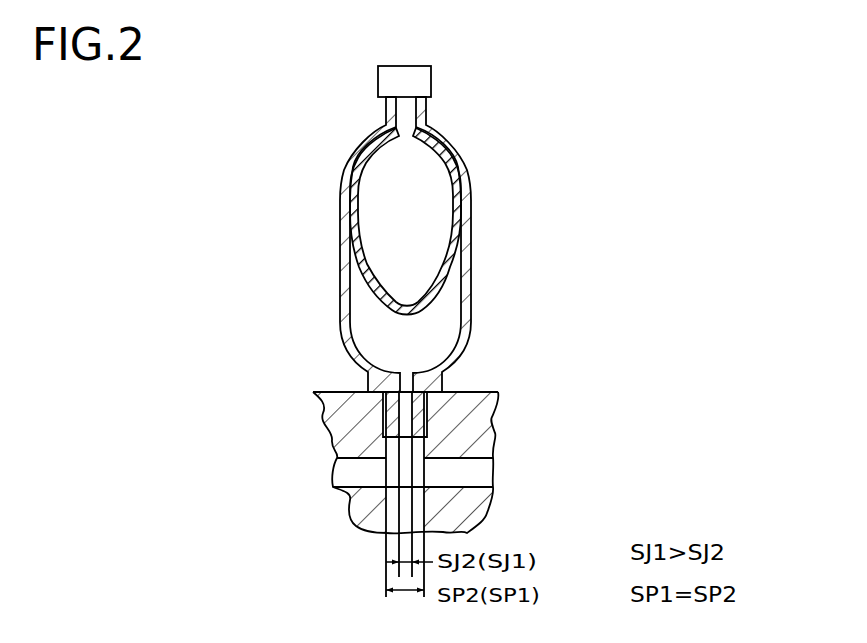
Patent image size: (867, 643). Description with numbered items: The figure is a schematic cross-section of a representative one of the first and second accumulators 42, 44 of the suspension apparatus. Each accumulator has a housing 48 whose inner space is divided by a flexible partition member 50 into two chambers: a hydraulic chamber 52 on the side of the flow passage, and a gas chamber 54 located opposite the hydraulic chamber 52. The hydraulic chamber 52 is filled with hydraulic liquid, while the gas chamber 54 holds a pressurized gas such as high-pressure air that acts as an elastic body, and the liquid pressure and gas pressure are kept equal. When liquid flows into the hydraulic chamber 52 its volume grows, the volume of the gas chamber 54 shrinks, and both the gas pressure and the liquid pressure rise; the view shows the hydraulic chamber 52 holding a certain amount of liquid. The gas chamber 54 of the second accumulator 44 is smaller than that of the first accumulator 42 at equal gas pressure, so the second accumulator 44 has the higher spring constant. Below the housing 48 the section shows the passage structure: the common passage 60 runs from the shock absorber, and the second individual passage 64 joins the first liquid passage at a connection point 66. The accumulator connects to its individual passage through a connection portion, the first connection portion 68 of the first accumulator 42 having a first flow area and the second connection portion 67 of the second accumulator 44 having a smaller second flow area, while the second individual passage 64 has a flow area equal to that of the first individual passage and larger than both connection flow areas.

The first accumulator 42 is at (446, 229).
The second accumulator 44 is at (446, 229).
The housing 48 is at (465, 178).
The flexible partition member 50 is at (455, 246).
The hydraulic chamber 52 is at (435, 332).
The gas chamber 54 is at (377, 210).
The common passage 60 is at (358, 472).
The second individual passage 64 is at (419, 448).
The connection point 66 is at (393, 477).
The second connection portion 67 is at (502, 401).
The first connection portion 68 is at (421, 413).